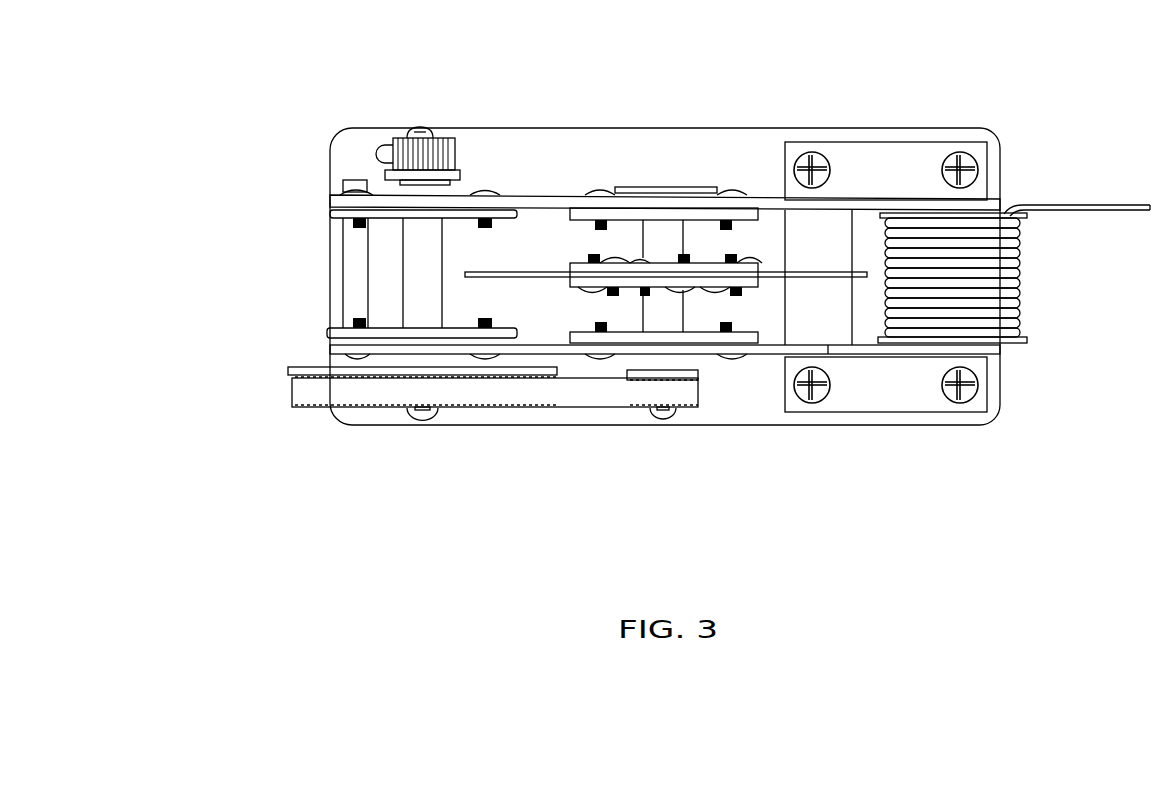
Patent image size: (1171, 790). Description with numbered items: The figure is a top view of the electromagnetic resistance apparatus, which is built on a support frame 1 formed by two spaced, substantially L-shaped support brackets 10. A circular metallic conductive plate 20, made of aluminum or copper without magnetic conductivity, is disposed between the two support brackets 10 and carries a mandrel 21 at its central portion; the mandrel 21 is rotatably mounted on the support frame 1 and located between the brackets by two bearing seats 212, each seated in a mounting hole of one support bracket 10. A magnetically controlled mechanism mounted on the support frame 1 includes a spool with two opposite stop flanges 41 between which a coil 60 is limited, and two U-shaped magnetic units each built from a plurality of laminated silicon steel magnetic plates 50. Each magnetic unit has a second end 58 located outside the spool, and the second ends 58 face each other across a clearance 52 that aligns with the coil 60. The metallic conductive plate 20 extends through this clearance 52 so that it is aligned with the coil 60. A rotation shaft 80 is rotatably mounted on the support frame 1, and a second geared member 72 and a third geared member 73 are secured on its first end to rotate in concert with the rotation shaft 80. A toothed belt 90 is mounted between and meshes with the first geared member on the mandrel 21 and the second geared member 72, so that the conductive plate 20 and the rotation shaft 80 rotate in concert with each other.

The support frame 1 is at (666, 258).
The support bracket 10 is at (752, 141).
The metallic conductive plate 20 is at (527, 273).
The mandrel 21 is at (660, 240).
The bearing seat 212 is at (676, 358).
The stop flange 41 is at (1002, 212).
The magnetic plate 50 is at (846, 156).
The clearance 52 is at (866, 268).
The second end 58 is at (822, 240).
The coil 60 is at (1008, 330).
The second geared member 72 is at (292, 368).
The third geared member 73 is at (427, 133).
The rotation shaft 80 is at (415, 268).
The toothed belt 90 is at (325, 390).